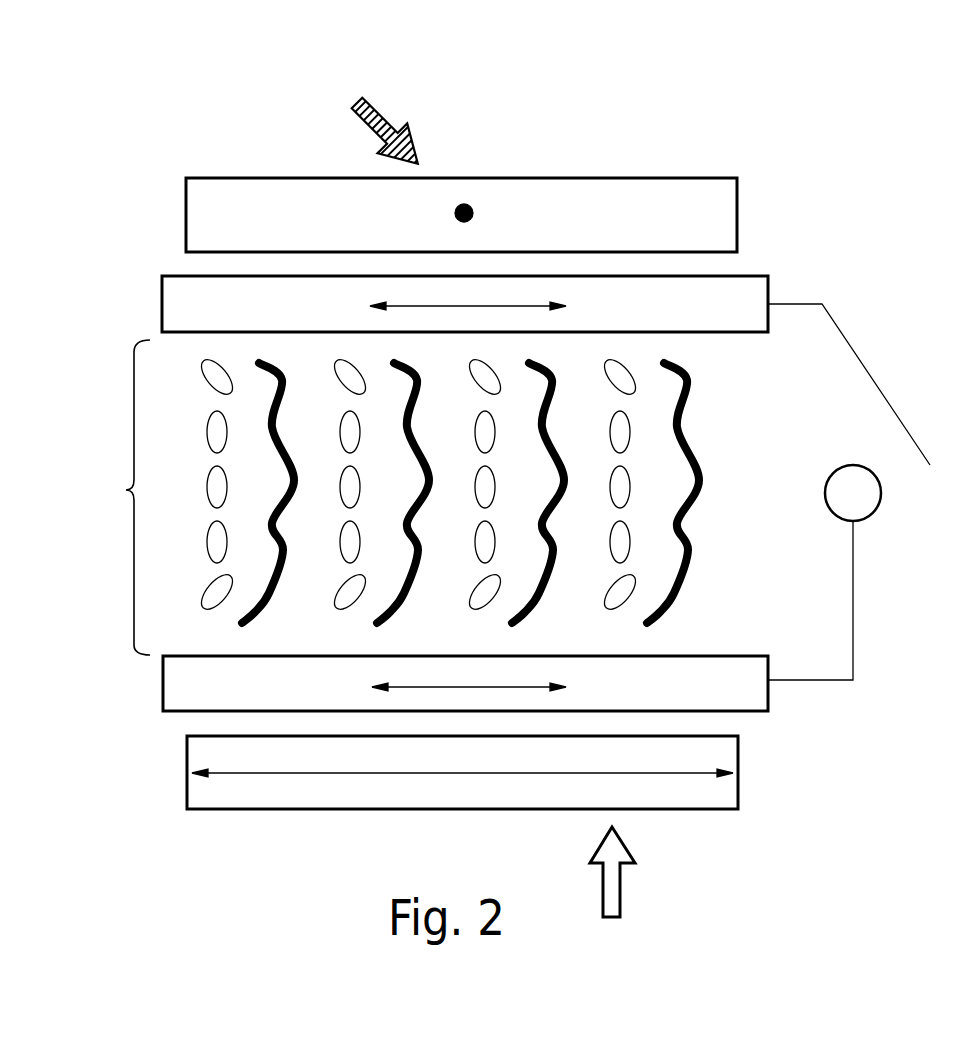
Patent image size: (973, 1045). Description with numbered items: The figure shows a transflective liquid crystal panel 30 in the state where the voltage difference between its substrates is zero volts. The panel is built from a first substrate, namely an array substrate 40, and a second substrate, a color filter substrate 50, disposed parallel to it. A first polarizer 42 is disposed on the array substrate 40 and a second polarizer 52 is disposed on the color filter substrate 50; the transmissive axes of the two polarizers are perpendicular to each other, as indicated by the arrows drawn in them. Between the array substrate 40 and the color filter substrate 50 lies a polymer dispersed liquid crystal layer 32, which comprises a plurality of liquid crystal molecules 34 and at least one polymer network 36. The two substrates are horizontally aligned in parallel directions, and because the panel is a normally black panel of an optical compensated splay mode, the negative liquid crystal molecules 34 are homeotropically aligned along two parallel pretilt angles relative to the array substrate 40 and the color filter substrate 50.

The transflective liquid crystal panel 30 is at (822, 118).
The polymer dispersed liquid crystal layer 32 is at (126, 490).
The liquid crystal molecules 34 is at (204, 381).
The polymer network 36 is at (279, 457).
The array substrate 40 is at (163, 683).
The first polarizer 42 is at (187, 782).
The color filter substrate 50 is at (162, 306).
The second polarizer 52 is at (186, 218).